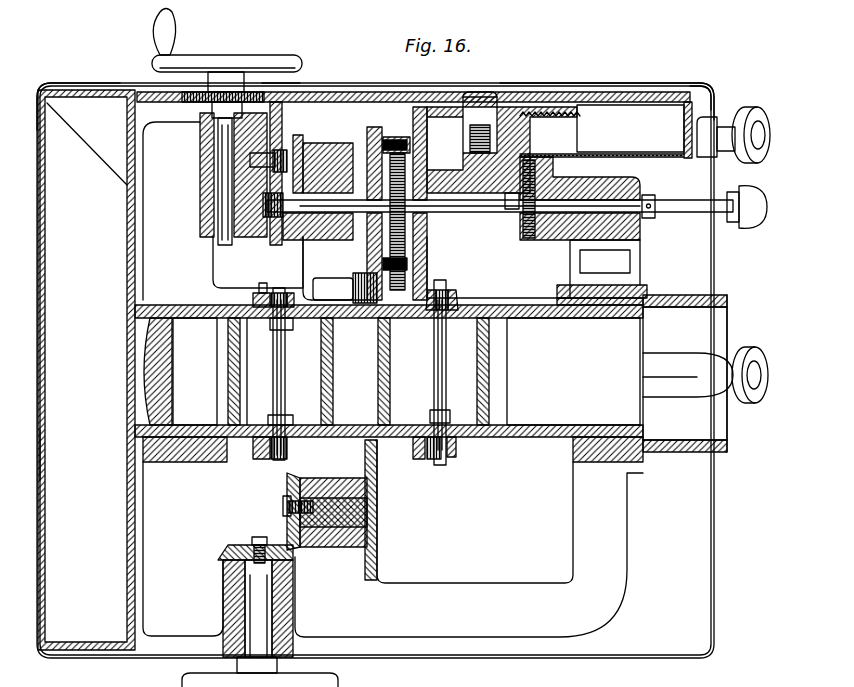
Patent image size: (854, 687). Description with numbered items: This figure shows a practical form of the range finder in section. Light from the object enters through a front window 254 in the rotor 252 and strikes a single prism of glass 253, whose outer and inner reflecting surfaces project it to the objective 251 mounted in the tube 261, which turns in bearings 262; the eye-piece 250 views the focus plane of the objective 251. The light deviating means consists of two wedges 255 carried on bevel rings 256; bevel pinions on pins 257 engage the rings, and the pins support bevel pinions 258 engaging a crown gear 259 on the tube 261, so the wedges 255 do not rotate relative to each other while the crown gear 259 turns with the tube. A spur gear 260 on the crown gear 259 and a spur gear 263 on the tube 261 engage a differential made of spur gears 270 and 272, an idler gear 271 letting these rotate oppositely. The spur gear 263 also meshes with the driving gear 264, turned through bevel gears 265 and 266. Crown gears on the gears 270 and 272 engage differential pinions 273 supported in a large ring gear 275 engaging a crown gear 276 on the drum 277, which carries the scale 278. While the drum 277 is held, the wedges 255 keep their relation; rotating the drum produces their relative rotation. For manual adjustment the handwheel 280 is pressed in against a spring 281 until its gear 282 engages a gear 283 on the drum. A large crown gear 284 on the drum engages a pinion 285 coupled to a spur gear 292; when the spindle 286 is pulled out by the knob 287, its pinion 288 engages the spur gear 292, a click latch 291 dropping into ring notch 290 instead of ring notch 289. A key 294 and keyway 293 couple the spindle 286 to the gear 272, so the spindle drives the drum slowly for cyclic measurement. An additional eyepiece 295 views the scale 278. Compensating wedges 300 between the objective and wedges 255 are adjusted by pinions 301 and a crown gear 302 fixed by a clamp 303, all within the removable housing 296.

The eye-piece 250 is at (755, 360).
The objective 251 is at (152, 370).
The rotor 252 is at (44, 456).
The prism of glass 253 is at (86, 370).
The front window 254 is at (38, 118).
The rotating wedge 255 is at (386, 355).
The bevel ring 256 is at (452, 402).
The pin 257 is at (456, 292).
The bevel pinion 258 is at (458, 299).
The crown gear 259 is at (433, 462).
The spur gear 260 is at (418, 461).
The tube 261 is at (580, 318).
The bearing 262 is at (640, 438).
The spur gear 263 is at (366, 440).
The driving gear 264 is at (378, 528).
The bevel gear 265 is at (291, 478).
The bevel gear 266 is at (220, 548).
The spur gear 270 is at (426, 248).
The idler gear 271 is at (365, 277).
The spur gear 272 is at (373, 130).
The differential pinion 273 is at (432, 118).
The ring gear 275 is at (395, 137).
The crown gear 276 is at (395, 112).
The drum 277 is at (620, 92).
The scale 278 is at (700, 159).
The handwheel 280 is at (245, 52).
The spring 281 is at (205, 148).
The gear 282 is at (190, 98).
The gear 283 is at (280, 84).
The crown gear 284 is at (692, 150).
The pinion 285 is at (280, 152).
The spindle 286 is at (672, 213).
The knob 287 is at (750, 226).
The pinion 288 is at (270, 222).
The ring notch 289 is at (537, 215).
The ring notch 290 is at (510, 214).
The click latch 291 is at (553, 177).
The spur gear 292 is at (333, 147).
The keyway 293 is at (348, 215).
The key 294 is at (350, 206).
The eyepiece 295 is at (756, 127).
The housing 296 is at (714, 598).
The rotating wedge 300 is at (230, 390).
The pinion 301 is at (281, 296).
The crown gear 302 is at (263, 293).
The clamp 303 is at (259, 289).